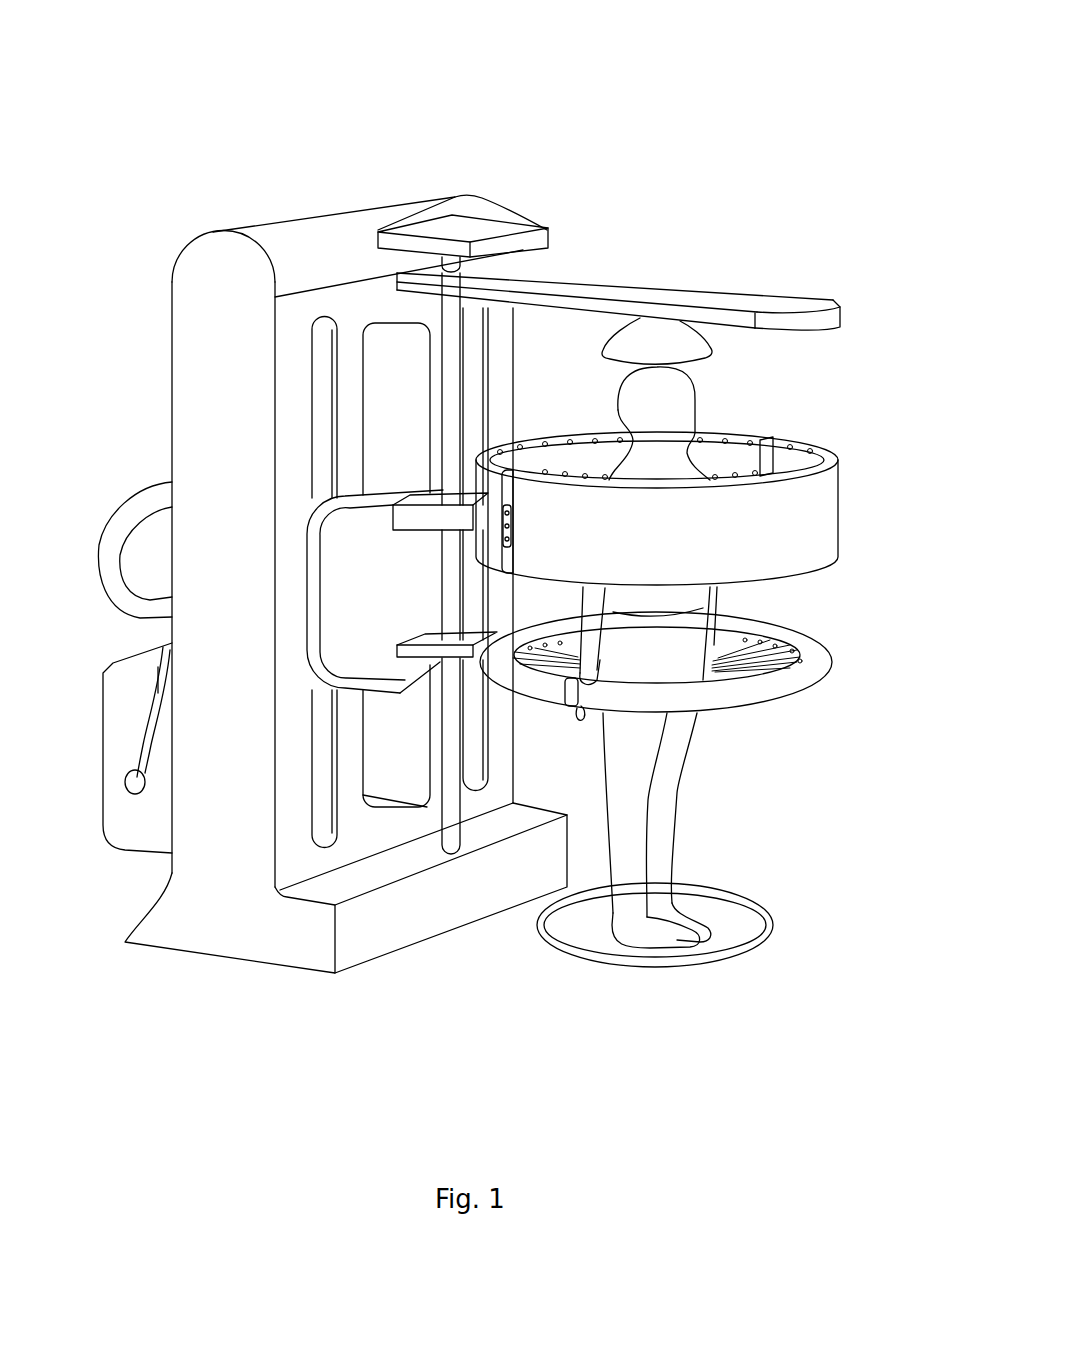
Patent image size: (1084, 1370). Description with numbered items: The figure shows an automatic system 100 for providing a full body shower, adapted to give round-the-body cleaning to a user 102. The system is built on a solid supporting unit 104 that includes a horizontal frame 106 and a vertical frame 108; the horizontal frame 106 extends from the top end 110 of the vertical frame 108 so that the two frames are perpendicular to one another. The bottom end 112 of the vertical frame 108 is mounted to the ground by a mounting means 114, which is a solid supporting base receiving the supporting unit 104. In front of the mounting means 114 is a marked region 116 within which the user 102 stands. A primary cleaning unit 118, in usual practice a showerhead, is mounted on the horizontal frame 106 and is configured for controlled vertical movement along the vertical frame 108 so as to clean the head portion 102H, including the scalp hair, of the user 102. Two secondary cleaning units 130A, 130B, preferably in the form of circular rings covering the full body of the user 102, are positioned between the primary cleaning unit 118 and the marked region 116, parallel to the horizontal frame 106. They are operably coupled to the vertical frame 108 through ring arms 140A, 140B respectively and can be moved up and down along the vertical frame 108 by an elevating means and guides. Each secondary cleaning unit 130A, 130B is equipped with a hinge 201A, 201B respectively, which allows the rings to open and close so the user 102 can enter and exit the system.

The automatic system 100 is at (479, 163).
The user 102 is at (677, 777).
The head portion 102H is at (660, 398).
The supporting unit 104 is at (217, 262).
The horizontal frame 106 is at (617, 288).
The vertical frame 108 is at (453, 400).
The top end 110 is at (440, 264).
The bottom end 112 is at (450, 857).
The mounting means 114 is at (307, 922).
The marked region 116 is at (737, 953).
The primary cleaning unit 118 is at (668, 330).
The secondary cleaning unit 130A is at (812, 537).
The secondary cleaning unit 130B is at (773, 690).
The ring arm 140A is at (410, 522).
The ring arm 140B is at (397, 645).
The hinge 201A is at (497, 506).
The hinge 201B is at (555, 690).